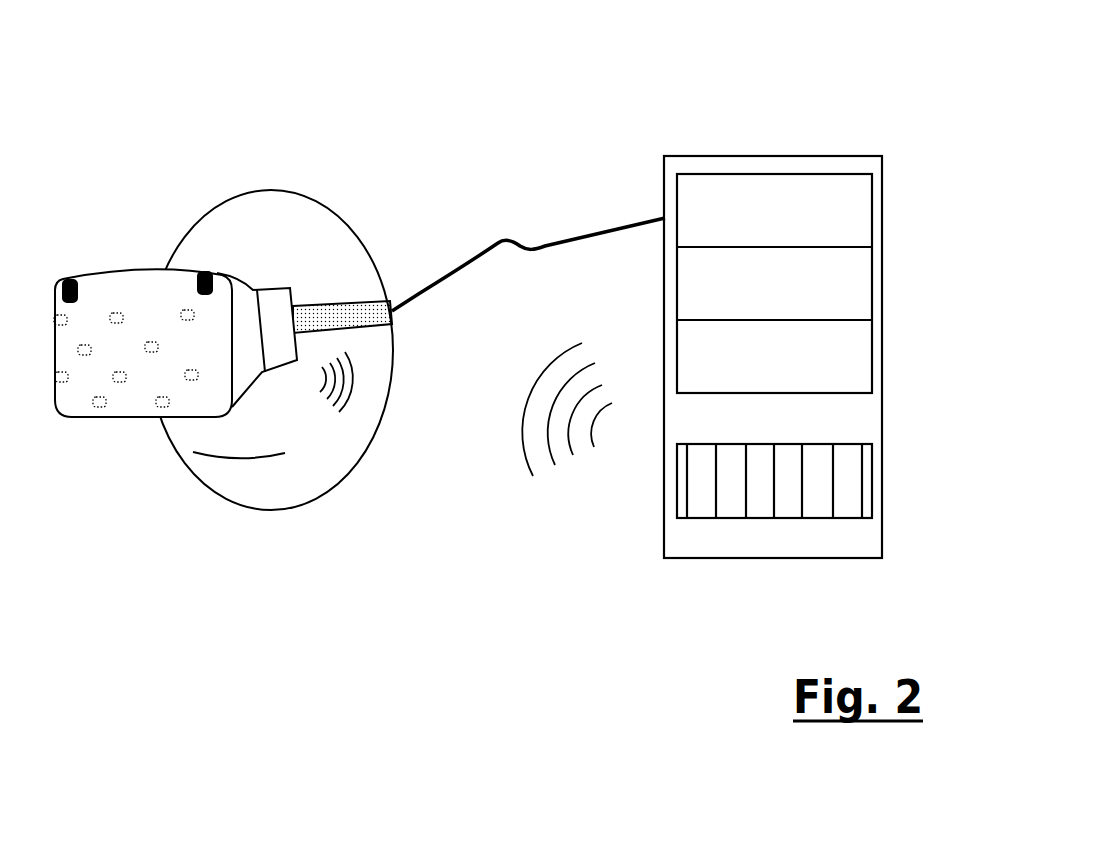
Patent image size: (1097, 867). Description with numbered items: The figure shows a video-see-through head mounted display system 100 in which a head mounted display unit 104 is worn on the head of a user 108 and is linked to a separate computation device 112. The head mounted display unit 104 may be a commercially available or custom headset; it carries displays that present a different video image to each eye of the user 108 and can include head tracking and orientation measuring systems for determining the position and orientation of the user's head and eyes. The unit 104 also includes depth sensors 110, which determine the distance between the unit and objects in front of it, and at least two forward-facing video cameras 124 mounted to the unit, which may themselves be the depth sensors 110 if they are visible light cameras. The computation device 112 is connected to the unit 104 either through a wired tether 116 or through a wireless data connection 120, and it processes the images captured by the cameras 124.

The video-see-through head mounted display system 100 is at (683, 82).
The head mounted display unit 104 is at (243, 305).
The user 108 is at (343, 193).
The depth sensors 110 is at (70, 280).
The computation device 112 is at (862, 146).
The wired tether 116 is at (498, 243).
The wireless data connection 120 is at (348, 410).
The video cameras 124 is at (62, 382).